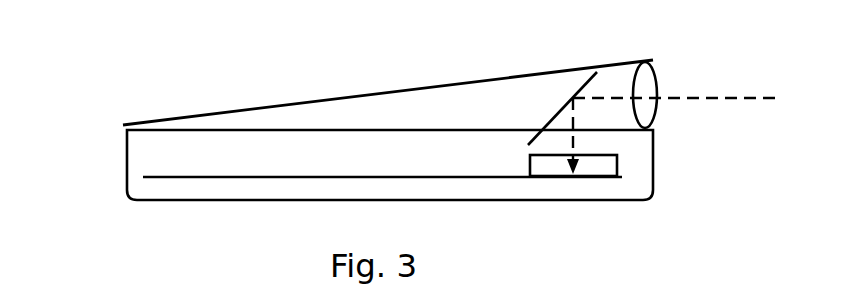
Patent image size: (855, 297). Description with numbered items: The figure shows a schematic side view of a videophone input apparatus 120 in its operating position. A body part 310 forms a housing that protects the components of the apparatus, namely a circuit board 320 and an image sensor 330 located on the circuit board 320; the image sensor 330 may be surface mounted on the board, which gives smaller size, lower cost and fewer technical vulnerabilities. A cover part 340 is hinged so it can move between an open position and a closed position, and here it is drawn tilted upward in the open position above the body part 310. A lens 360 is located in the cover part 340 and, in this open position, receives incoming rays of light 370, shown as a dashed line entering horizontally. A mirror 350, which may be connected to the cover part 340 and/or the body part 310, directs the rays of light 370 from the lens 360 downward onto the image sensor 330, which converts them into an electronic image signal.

The videophone input apparatus 120 is at (198, 75).
The body part 310 is at (127, 170).
The circuit board (PCB) 320 is at (197, 178).
The image sensor 330 is at (555, 168).
The cover part 340 is at (305, 102).
The mirror 350 is at (568, 98).
The lens 360 is at (656, 80).
The rays of light 370 is at (758, 100).